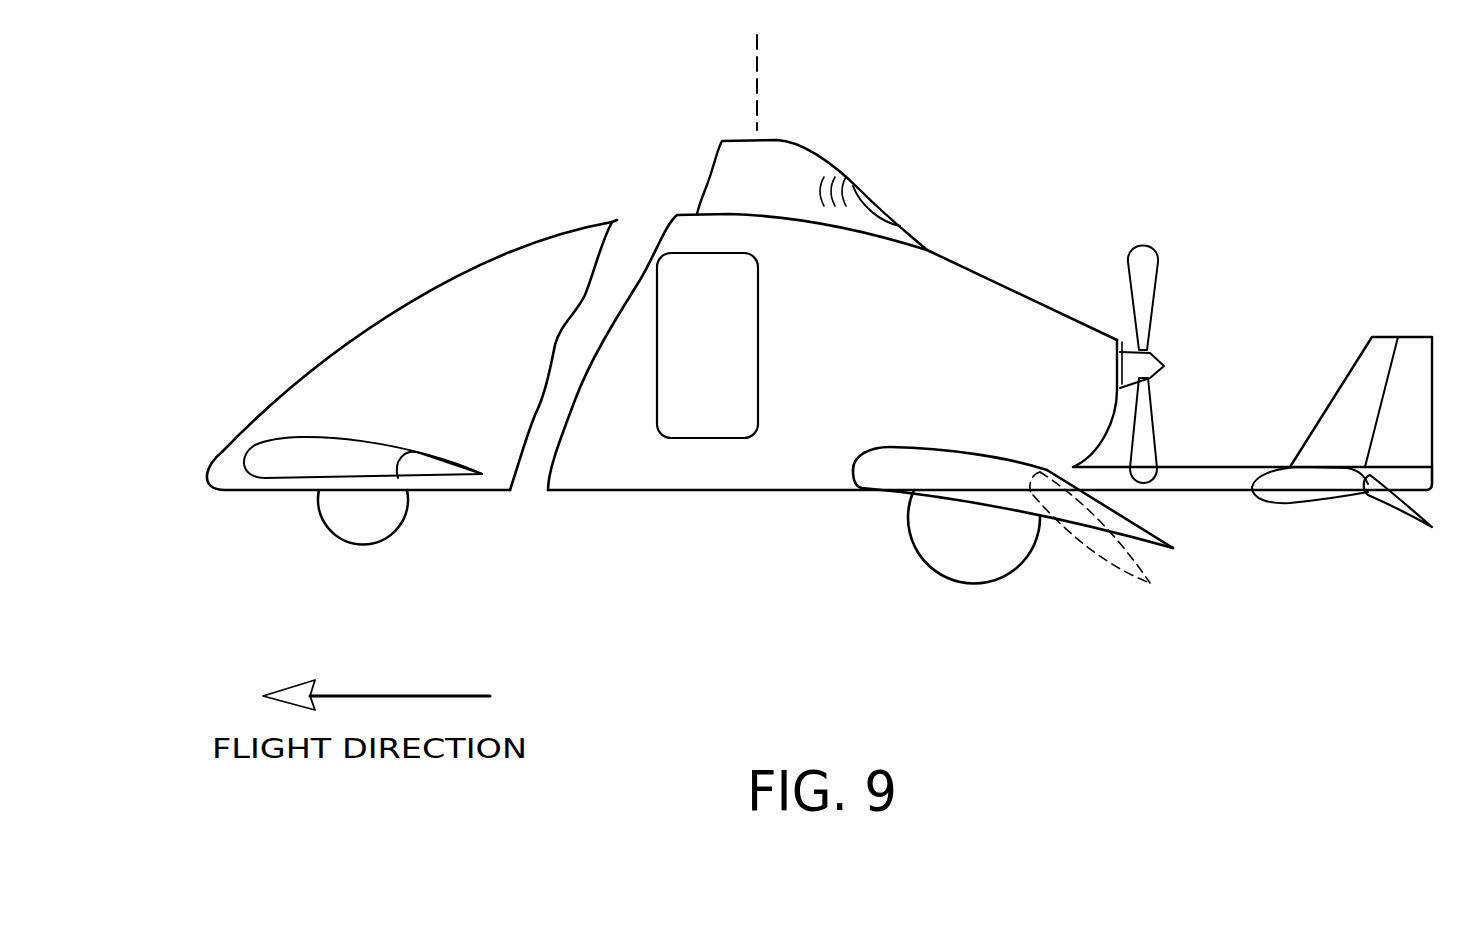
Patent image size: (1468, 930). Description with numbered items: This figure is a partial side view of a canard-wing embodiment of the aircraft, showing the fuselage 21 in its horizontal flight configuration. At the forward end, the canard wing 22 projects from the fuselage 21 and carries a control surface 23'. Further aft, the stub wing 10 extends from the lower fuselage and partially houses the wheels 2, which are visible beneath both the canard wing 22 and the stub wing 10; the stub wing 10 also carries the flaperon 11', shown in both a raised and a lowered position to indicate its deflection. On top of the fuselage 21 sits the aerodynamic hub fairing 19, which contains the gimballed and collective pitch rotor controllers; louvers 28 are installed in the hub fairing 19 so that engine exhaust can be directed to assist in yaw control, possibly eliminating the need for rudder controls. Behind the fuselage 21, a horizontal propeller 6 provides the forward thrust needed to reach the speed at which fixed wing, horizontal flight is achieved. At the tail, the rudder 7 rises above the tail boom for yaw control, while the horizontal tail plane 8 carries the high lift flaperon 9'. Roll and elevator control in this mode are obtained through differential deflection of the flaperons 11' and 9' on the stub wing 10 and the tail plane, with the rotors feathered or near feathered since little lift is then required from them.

The wheels 2 is at (370, 529).
The horizontal propeller 6 is at (1162, 281).
The rudders 7 is at (1415, 333).
The horizontal stabilizer 8 is at (1290, 464).
The high lift flaperon 9' is at (1389, 520).
The stub wing 10 is at (927, 446).
The flaperon 11' is at (1150, 544).
The aerodynamic hub fairing 19 is at (810, 143).
The fuselage 21 is at (969, 265).
The canard wing 22 is at (290, 436).
The control surface 23' is at (434, 435).
The louvers 28 is at (845, 173).